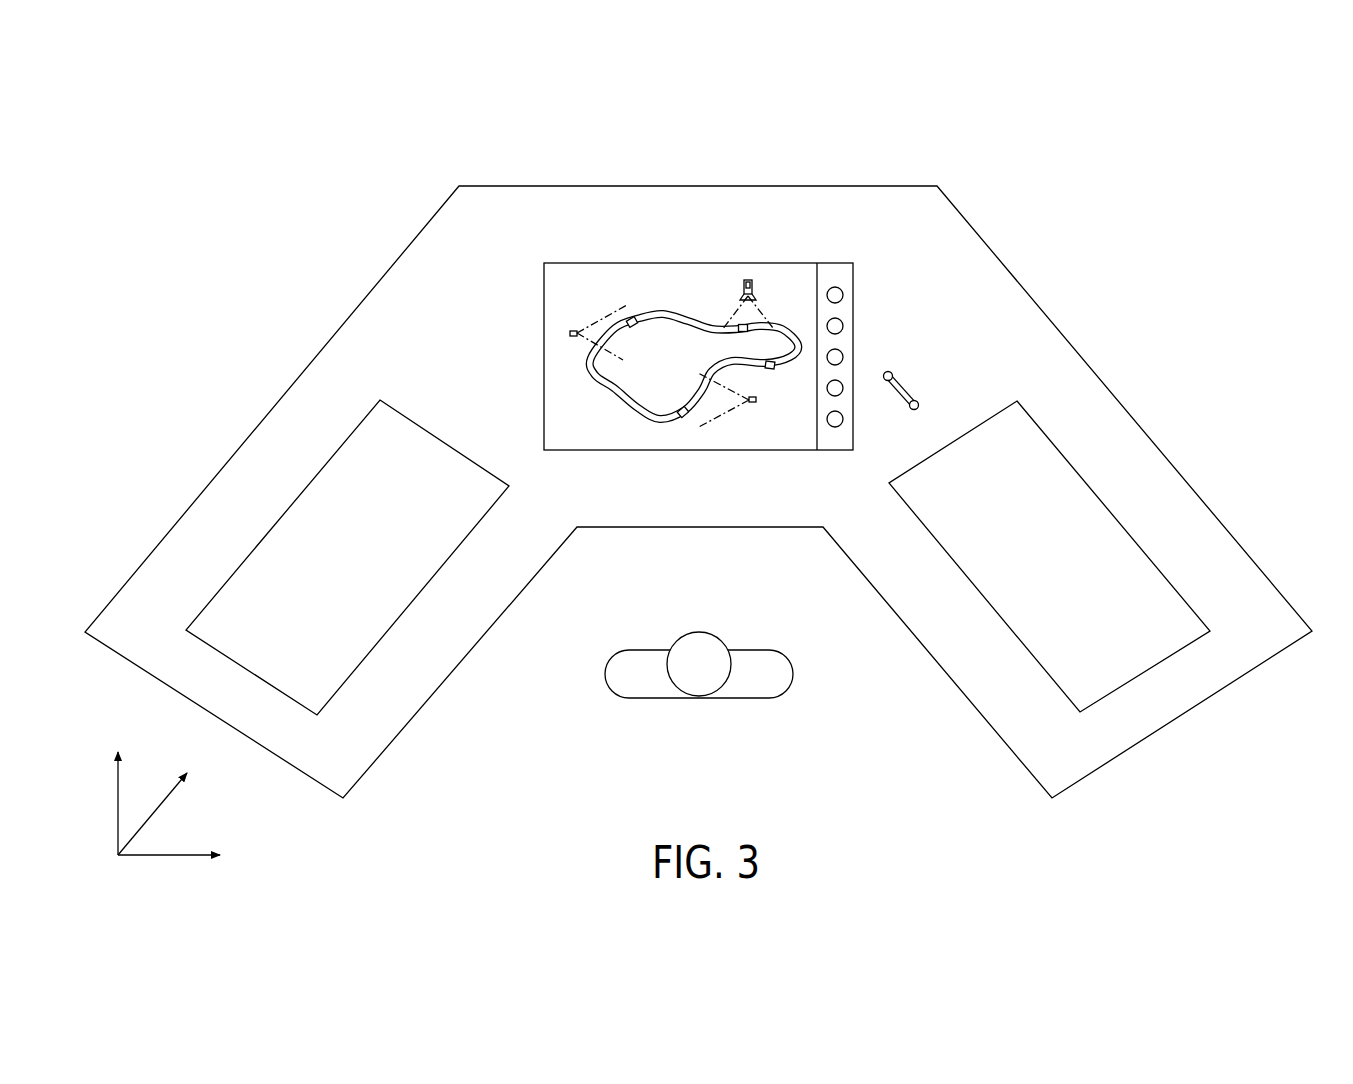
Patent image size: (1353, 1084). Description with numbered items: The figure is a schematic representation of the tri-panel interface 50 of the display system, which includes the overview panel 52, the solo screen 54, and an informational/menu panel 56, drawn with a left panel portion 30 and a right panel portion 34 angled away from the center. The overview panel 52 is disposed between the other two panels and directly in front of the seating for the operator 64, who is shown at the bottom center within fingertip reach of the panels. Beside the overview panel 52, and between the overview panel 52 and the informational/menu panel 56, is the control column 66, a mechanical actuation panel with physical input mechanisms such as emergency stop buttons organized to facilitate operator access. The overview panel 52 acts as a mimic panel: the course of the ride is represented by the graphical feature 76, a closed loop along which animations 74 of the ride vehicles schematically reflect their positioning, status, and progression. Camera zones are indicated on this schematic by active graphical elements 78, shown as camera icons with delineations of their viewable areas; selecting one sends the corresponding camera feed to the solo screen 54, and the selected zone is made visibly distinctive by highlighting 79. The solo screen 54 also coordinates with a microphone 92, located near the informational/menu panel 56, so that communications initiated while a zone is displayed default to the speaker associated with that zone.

The first panel portion 30 is at (341, 259).
The second panel portion 34 is at (1057, 261).
The tri-panel interface 50 is at (948, 156).
The overview panel 52 is at (622, 263).
The solo screen 54 is at (313, 476).
The informational/menu panel 56 is at (1118, 515).
The operator 64 is at (686, 675).
The control column 66 is at (835, 263).
The animations 74 is at (632, 318).
The graphical feature 76 is at (799, 324).
The active graphical elements 78 is at (722, 296).
The highlighting 79 is at (746, 282).
The microphone 92 is at (906, 382).